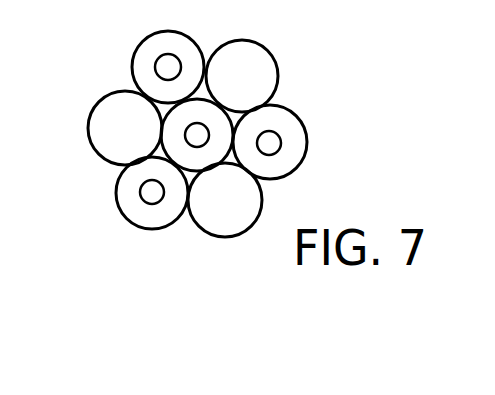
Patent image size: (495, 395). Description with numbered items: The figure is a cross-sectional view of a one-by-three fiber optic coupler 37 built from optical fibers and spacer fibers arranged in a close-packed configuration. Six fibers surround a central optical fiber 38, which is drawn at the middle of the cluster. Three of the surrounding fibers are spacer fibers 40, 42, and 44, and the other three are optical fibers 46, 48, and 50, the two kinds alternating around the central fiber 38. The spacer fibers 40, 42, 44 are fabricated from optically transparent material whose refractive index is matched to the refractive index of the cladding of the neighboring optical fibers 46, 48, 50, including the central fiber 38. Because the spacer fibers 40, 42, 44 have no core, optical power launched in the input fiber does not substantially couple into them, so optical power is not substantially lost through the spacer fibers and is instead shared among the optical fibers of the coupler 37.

The 1×3 coupler 37 is at (102, 75).
The central optical fiber 38 is at (224, 118).
The spacer fiber 40 is at (253, 52).
The spacer fiber 42 is at (100, 143).
The spacer fiber 44 is at (225, 230).
The optical fiber 46 is at (158, 34).
The optical fiber 48 is at (135, 223).
The optical fiber 50 is at (296, 156).